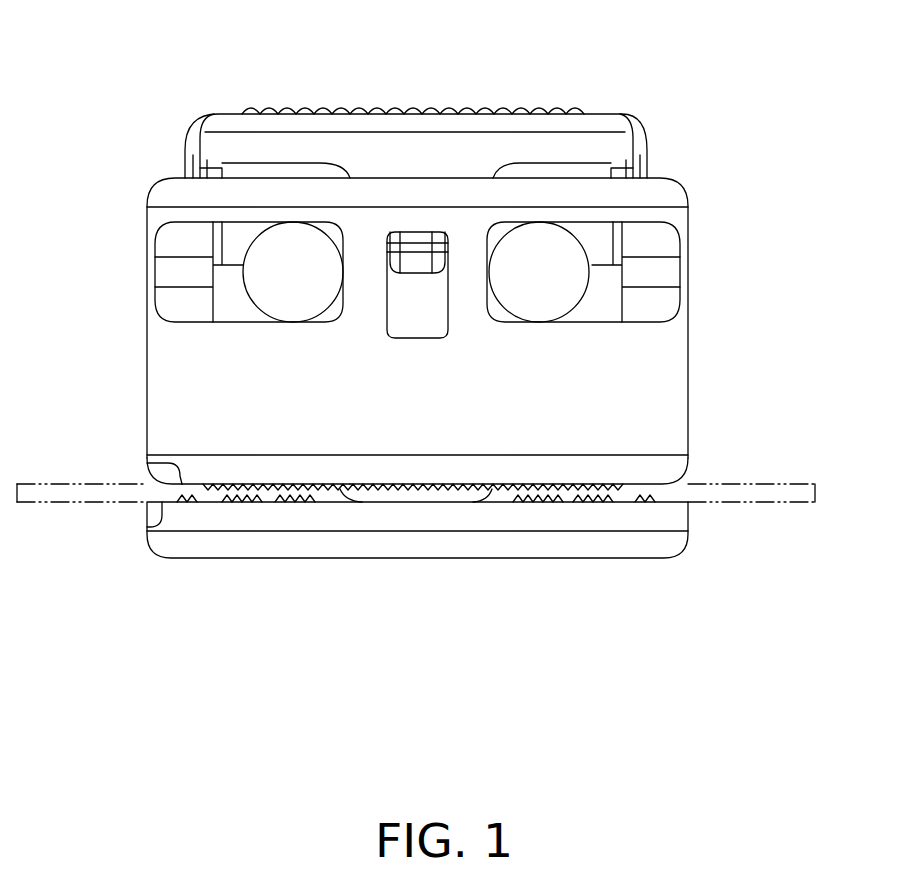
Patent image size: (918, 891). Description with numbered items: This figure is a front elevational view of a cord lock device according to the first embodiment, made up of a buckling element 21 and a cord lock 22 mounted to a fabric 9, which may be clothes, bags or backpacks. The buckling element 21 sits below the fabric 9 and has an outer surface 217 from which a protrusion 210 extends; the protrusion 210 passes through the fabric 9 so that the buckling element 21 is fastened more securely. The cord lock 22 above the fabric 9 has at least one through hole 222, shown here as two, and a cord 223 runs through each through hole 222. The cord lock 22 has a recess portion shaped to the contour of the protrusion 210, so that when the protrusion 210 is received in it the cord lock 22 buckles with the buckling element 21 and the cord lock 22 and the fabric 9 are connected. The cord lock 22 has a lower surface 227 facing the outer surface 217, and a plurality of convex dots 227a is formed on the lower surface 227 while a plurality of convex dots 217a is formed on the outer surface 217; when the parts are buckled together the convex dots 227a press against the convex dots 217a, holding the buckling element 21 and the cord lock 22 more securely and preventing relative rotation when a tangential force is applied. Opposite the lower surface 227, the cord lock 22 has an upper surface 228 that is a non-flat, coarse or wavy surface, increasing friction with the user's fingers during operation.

The fabric 9 is at (779, 497).
The buckling element 21 is at (640, 540).
The cord lock 22 is at (690, 355).
The protrusion 210 is at (428, 497).
The outer surface 217 is at (147, 527).
The convex dots 217a is at (256, 500).
The through hole 222 is at (237, 241).
The cord 223 is at (537, 287).
The lower surface 227 is at (178, 478).
The convex dots 227a is at (242, 483).
The upper surface 228 is at (262, 108).